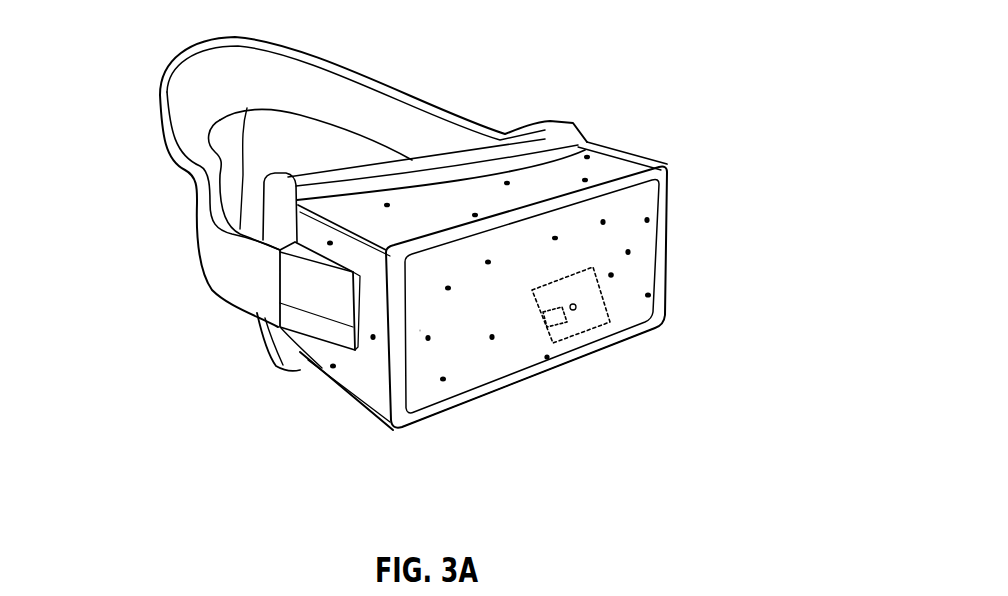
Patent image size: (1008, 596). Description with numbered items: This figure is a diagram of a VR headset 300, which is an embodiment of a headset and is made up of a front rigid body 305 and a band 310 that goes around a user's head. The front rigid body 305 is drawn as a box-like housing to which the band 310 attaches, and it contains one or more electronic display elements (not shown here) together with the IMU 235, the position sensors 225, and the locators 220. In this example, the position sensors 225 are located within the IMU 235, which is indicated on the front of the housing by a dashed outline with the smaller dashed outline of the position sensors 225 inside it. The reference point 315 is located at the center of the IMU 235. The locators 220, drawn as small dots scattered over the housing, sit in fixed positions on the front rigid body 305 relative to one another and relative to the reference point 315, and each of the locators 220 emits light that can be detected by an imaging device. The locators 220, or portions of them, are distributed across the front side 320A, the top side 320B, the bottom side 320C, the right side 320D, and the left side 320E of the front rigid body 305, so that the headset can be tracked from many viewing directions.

The VR headset 300 is at (88, 38).
The band 310 is at (421, 97).
The front rigid body 305 is at (462, 288).
The front side 320A is at (432, 398).
The top side 320B is at (364, 205).
The bottom side 320C is at (415, 390).
The right side 320D is at (366, 367).
The left side 320E is at (651, 151).
The locators 220 is at (652, 294).
The position sensors 225 is at (548, 326).
The IMU 235 is at (614, 320).
The reference point 315 is at (577, 313).